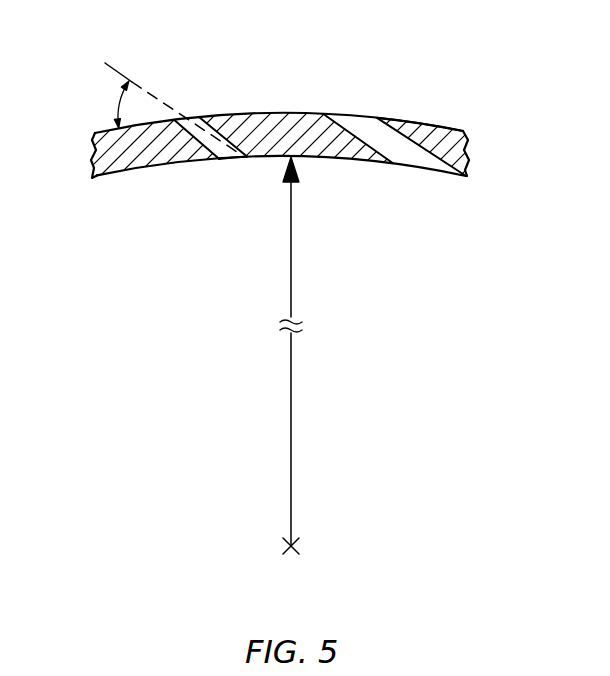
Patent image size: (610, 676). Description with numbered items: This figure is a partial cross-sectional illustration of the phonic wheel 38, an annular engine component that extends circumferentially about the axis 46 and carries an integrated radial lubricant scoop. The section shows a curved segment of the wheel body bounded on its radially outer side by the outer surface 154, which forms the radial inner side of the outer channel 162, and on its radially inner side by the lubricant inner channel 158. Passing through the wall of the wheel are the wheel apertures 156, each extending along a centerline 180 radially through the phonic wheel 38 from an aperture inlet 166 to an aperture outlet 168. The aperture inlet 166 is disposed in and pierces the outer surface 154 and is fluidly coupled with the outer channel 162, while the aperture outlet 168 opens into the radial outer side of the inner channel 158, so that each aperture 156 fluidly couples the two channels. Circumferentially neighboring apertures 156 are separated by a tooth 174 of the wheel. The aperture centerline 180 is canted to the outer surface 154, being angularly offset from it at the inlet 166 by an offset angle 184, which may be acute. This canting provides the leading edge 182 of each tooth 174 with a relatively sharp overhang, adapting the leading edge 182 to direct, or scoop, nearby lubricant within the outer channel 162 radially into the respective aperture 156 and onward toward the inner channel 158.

The phonic wheel 38 is at (320, 139).
The axis 46 is at (297, 547).
The outer surface 154 is at (308, 115).
The wheel aperture 156 is at (190, 148).
The lubricant inner channel 158 is at (377, 197).
The outer channel 162 is at (407, 110).
The aperture inlet 166 is at (223, 96).
The aperture outlet 168 is at (223, 160).
The phonic wheel tooth 174 is at (288, 113).
The aperture centerline 180 is at (117, 72).
The leading edge 182 is at (208, 118).
The offset angle 184 is at (117, 103).